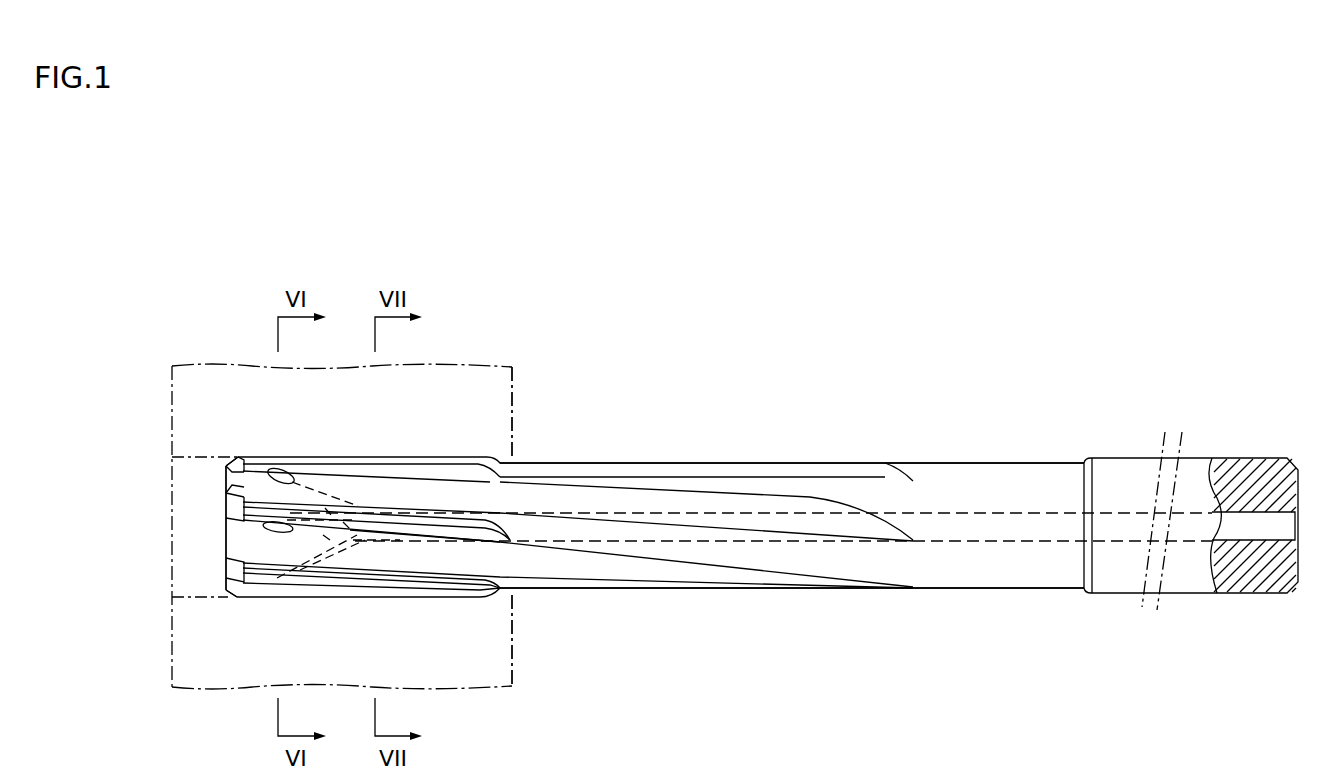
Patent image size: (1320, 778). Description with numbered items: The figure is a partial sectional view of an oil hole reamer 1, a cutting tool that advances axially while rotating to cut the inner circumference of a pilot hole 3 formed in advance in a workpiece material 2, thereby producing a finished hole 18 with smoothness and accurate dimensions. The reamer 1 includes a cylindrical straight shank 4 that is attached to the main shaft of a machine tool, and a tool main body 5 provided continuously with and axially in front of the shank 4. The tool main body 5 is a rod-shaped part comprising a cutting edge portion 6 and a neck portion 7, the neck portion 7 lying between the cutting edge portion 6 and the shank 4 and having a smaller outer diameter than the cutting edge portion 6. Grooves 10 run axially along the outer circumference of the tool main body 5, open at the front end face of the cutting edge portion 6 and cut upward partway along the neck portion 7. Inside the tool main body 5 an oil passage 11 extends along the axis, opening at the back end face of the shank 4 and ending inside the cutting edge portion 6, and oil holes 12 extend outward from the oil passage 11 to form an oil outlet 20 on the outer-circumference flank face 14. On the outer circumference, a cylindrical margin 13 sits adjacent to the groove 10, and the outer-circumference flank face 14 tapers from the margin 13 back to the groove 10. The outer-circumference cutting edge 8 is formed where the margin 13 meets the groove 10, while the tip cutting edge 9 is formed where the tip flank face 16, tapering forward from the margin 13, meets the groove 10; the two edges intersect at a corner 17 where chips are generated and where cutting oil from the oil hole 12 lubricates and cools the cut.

The oil hole reamer 1 is at (736, 460).
The workpiece material 2 is at (516, 393).
The pilot hole 3 is at (221, 597).
The shank 4 is at (1123, 468).
The tool main body 5 is at (592, 590).
The cutting edge portion 6 is at (460, 470).
The neck portion 7 is at (942, 472).
The outer-circumference cutting edge 8 is at (364, 500).
The tip cutting edge 9 is at (238, 495).
The groove 10 is at (597, 560).
The oil passage 11 is at (1246, 512).
The oil hole 12 is at (312, 480).
The margin 13 is at (398, 507).
The outer-circumference flank face 14 is at (388, 527).
The tip flank face 16 is at (238, 513).
The corner 17 is at (226, 467).
The hole 18 is at (322, 597).
The oil outlet 20 is at (278, 471).